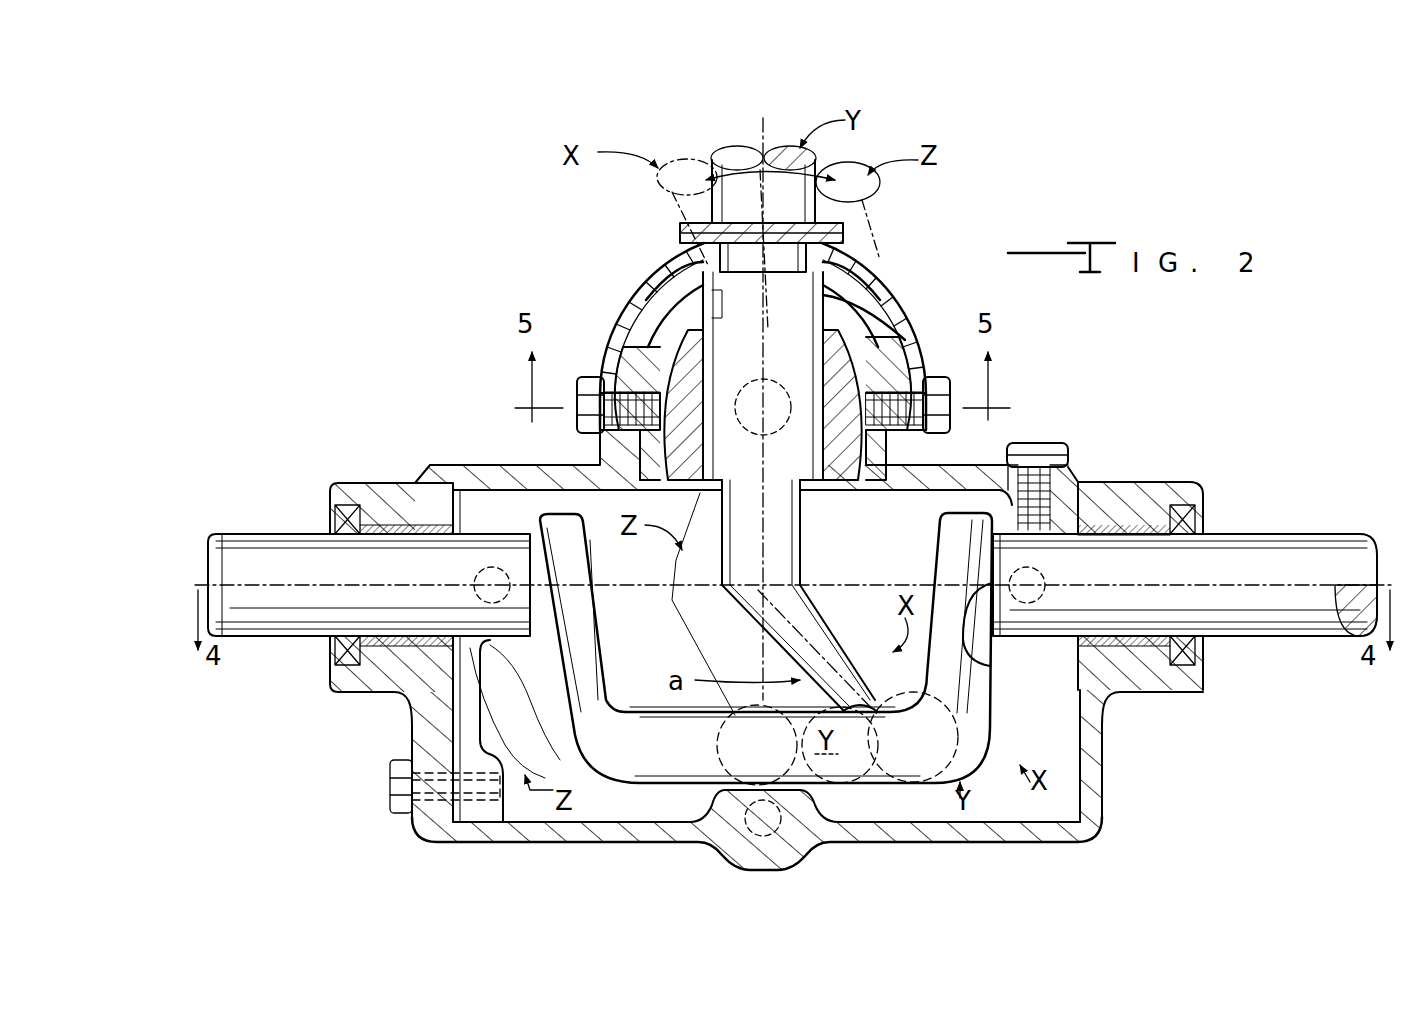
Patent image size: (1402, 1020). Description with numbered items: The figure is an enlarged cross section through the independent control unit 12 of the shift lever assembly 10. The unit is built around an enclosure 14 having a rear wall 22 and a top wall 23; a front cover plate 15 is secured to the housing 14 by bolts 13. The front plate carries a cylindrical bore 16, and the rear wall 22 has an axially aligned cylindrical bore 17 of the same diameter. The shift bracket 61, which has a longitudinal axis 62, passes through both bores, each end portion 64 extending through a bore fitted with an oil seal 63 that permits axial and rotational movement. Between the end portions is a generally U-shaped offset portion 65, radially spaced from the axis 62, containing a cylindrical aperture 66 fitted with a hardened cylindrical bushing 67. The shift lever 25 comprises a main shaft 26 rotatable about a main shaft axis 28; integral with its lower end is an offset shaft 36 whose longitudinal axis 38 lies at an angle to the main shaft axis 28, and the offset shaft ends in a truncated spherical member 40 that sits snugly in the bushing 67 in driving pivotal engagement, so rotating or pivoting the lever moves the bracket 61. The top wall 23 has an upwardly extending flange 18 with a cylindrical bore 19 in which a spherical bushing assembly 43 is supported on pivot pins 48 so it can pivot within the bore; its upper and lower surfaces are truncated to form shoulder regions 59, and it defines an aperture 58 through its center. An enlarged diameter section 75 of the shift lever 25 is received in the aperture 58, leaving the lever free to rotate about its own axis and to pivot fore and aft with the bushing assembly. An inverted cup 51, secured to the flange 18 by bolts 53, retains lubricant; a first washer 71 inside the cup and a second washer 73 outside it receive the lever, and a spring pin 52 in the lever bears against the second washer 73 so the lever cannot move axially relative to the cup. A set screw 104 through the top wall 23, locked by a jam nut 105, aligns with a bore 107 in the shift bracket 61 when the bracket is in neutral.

The shift lever assembly 10 is at (1100, 380).
The independent control unit 12 is at (512, 462).
The bolts 13 is at (390, 790).
The enclosure 14 is at (640, 842).
The front cover plate 15 is at (365, 695).
The cylindrical bore 16 is at (385, 534).
The cylindrical bore 17 is at (1135, 530).
The lug or flange 18 is at (882, 372).
The cylindrical bore 19 is at (662, 345).
The rear wall 22 is at (1105, 762).
The top wall 23 is at (962, 470).
The shift lever 25 is at (706, 178).
The main shaft 26 is at (712, 215).
The main shaft axis 28 is at (763, 133).
The offset shaft 36 is at (790, 527).
The longitudinal axis 38 is at (806, 655).
The truncated spherical member 40 is at (830, 822).
The spherical bushing assembly 43 is at (888, 318).
The pivot pins 48 is at (768, 437).
The inverted cup 51 is at (602, 352).
The spring pin 52 is at (680, 235).
The bolts 53 is at (950, 400).
The aperture 58 is at (712, 375).
The shoulder regions 59 is at (645, 298).
The shift bracket 61 is at (1320, 534).
The longitudinal axis 62 is at (1300, 612).
The oil seal 63 is at (332, 518).
The end portion 64 is at (265, 632).
The offset portion 65 is at (600, 622).
The cylindrical aperture 66 is at (880, 775).
The hardened cylindrical bushing 67 is at (875, 700).
The first washer 71 is at (712, 306).
The second washer 73 is at (850, 248).
The enlarged diameter section 75 is at (858, 285).
The set screw 104 is at (1068, 468).
The jam nut 105 is at (1048, 443).
The bore 107 is at (1042, 550).